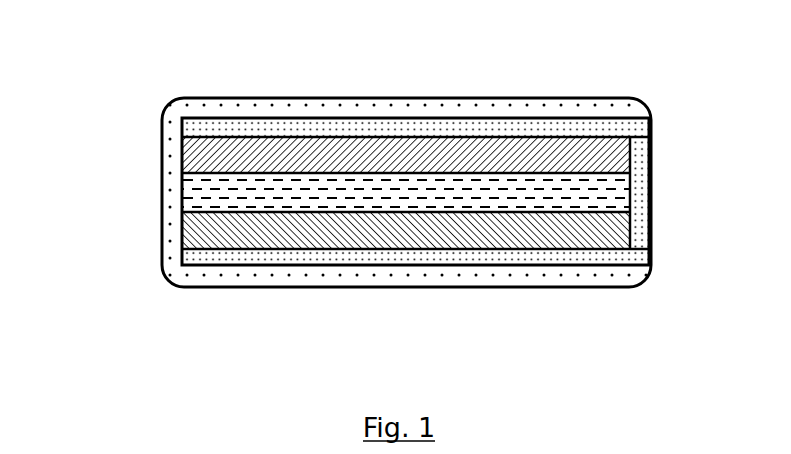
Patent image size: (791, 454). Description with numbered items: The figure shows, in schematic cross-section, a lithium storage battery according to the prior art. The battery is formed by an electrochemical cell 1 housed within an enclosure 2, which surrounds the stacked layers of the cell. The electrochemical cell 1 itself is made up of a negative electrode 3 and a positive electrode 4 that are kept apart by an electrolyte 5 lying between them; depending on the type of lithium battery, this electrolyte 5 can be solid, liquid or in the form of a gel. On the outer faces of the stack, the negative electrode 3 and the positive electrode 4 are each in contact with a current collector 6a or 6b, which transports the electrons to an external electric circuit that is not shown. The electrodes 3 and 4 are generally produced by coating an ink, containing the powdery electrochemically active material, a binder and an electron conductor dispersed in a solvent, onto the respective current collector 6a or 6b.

The electrochemical cell 1 is at (670, 252).
The enclosure 2 is at (192, 107).
The negative electrode 3 is at (197, 155).
The positive electrode 4 is at (405, 230).
The electrolyte 5 is at (557, 192).
The current collector 6a is at (368, 130).
The current collector 6b is at (212, 258).